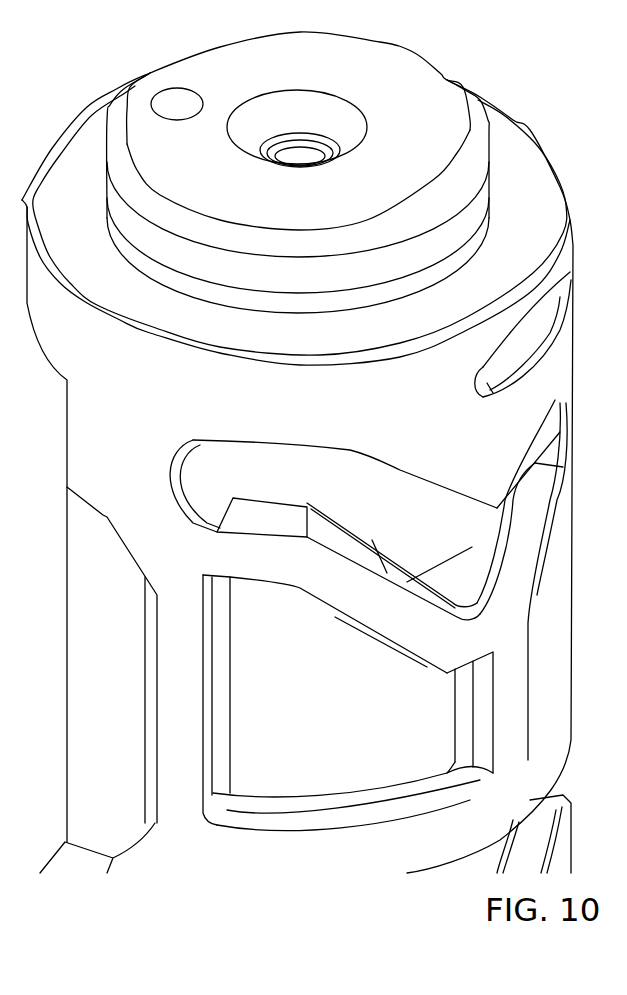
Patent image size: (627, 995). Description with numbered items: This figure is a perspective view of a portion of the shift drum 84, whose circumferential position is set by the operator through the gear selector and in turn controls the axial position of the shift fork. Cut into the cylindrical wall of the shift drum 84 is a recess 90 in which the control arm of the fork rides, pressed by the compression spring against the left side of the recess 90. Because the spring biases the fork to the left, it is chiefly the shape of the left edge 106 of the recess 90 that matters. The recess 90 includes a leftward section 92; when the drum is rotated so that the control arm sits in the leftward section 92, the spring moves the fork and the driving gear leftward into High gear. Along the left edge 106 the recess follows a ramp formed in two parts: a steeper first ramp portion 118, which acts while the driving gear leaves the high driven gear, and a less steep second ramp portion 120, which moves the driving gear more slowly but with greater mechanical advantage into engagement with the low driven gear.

The shift drum 84 is at (527, 190).
The recess 90 is at (283, 472).
The leftward section 92 is at (538, 598).
The left edge 106 is at (560, 432).
The first ramp portion 118 is at (450, 575).
The second ramp portion 120 is at (340, 545).